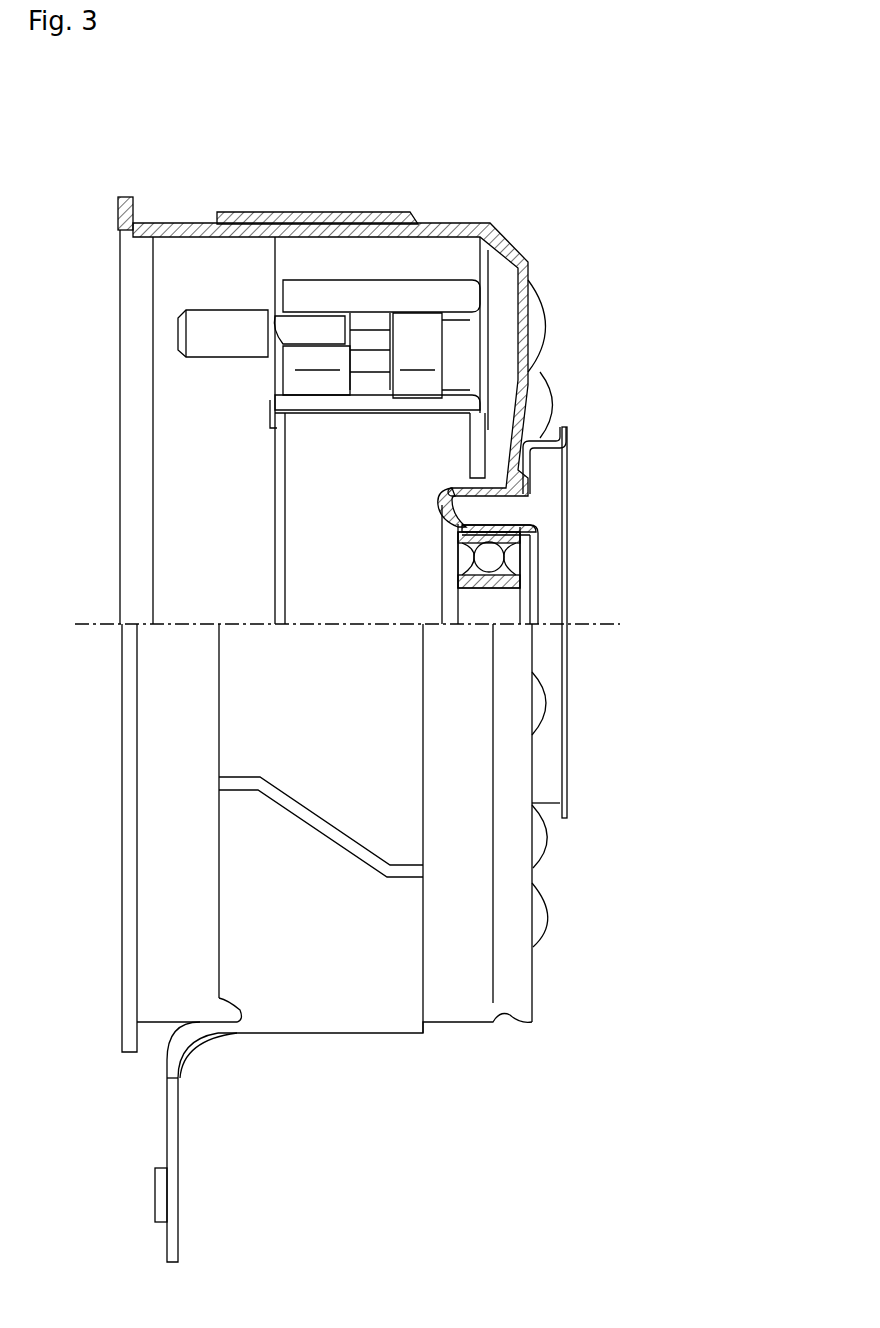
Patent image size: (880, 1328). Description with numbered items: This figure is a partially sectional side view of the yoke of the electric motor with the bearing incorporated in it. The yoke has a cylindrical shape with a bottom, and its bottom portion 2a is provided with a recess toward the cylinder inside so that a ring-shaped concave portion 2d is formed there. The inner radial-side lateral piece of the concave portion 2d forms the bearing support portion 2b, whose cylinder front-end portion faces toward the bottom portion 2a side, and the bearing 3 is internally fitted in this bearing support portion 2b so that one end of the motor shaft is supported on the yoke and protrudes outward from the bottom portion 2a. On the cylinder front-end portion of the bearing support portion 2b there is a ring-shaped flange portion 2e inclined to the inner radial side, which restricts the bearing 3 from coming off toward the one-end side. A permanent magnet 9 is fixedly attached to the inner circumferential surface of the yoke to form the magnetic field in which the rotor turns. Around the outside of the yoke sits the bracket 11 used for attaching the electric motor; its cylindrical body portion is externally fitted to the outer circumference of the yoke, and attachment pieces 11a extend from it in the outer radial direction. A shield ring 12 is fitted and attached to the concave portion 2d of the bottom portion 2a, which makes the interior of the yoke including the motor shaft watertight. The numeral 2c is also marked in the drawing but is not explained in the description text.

The yoke bottom portion 2a is at (527, 330).
The bearing support portion 2b is at (520, 510).
The flange 2c is at (135, 210).
The concave portion 2d is at (520, 498).
The flange portion 2e is at (538, 535).
The bearing 3 is at (516, 583).
The permanent magnet 9 is at (428, 257).
The bracket 11 is at (300, 213).
The attachment piece 11a is at (172, 1155).
The shield ring 12 is at (569, 742).